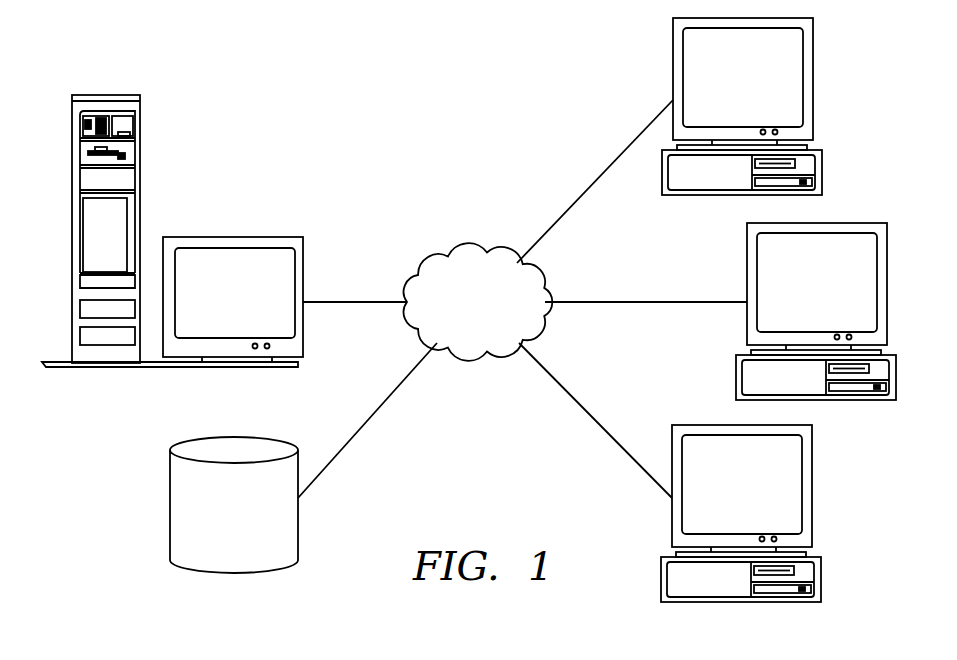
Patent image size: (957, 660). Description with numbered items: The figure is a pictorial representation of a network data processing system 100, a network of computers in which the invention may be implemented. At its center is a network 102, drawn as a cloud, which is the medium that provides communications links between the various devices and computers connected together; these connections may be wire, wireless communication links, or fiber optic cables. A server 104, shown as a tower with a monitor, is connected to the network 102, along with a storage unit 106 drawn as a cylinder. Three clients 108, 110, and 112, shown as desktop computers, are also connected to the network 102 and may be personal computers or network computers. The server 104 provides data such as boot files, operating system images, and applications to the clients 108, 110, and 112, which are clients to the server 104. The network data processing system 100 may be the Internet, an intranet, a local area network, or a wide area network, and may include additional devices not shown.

The network data processing system 100 is at (343, 93).
The network 102 is at (445, 254).
The server 104 is at (221, 303).
The storage unit 106 is at (170, 505).
The client 108 is at (727, 91).
The client 110 is at (816, 325).
The client 112 is at (741, 527).